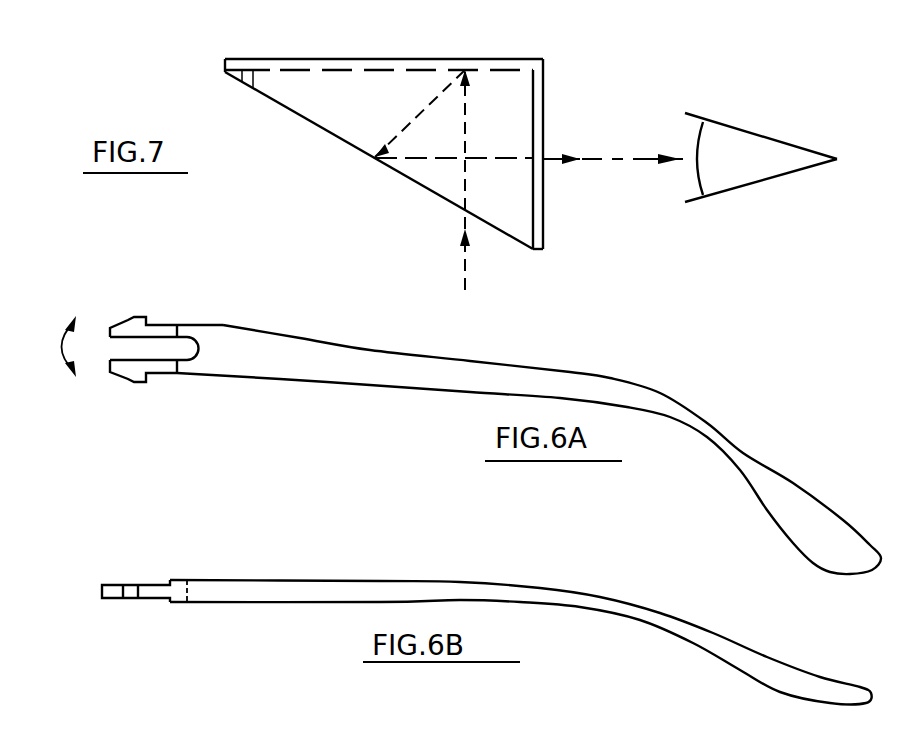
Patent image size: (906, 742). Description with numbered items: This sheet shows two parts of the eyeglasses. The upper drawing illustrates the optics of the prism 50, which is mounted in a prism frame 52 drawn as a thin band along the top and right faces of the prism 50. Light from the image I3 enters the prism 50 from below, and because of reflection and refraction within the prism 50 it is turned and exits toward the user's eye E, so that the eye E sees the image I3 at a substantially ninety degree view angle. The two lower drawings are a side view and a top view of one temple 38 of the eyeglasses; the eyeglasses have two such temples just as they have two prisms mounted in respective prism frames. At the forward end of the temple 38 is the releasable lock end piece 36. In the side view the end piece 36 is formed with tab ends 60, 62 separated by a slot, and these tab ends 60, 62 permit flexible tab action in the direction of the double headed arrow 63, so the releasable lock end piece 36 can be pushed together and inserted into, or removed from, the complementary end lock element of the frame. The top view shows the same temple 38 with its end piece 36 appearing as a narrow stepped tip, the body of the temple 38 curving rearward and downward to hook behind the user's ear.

In FIG. 6A, the releasable lock end piece 36 is at (160, 323).
In FIG. 6B, the releasable lock end piece 36 is at (143, 585).
In FIG. 6A, the temple 38 is at (320, 380).
In FIG. 6B, the temple 38 is at (287, 580).
In FIG. 7, the prism 50 is at (343, 143).
In FIG. 7, the prism frame 52 is at (342, 58).
In FIG. 6A, the tab end 60 is at (125, 315).
In FIG. 6A, the tab end 62 is at (125, 380).
In FIG. 6A, the double headed arrow 63 is at (63, 355).
In FIG. 7, the user's eye E is at (762, 135).
In FIG. 7, the image I3 is at (529, 193).